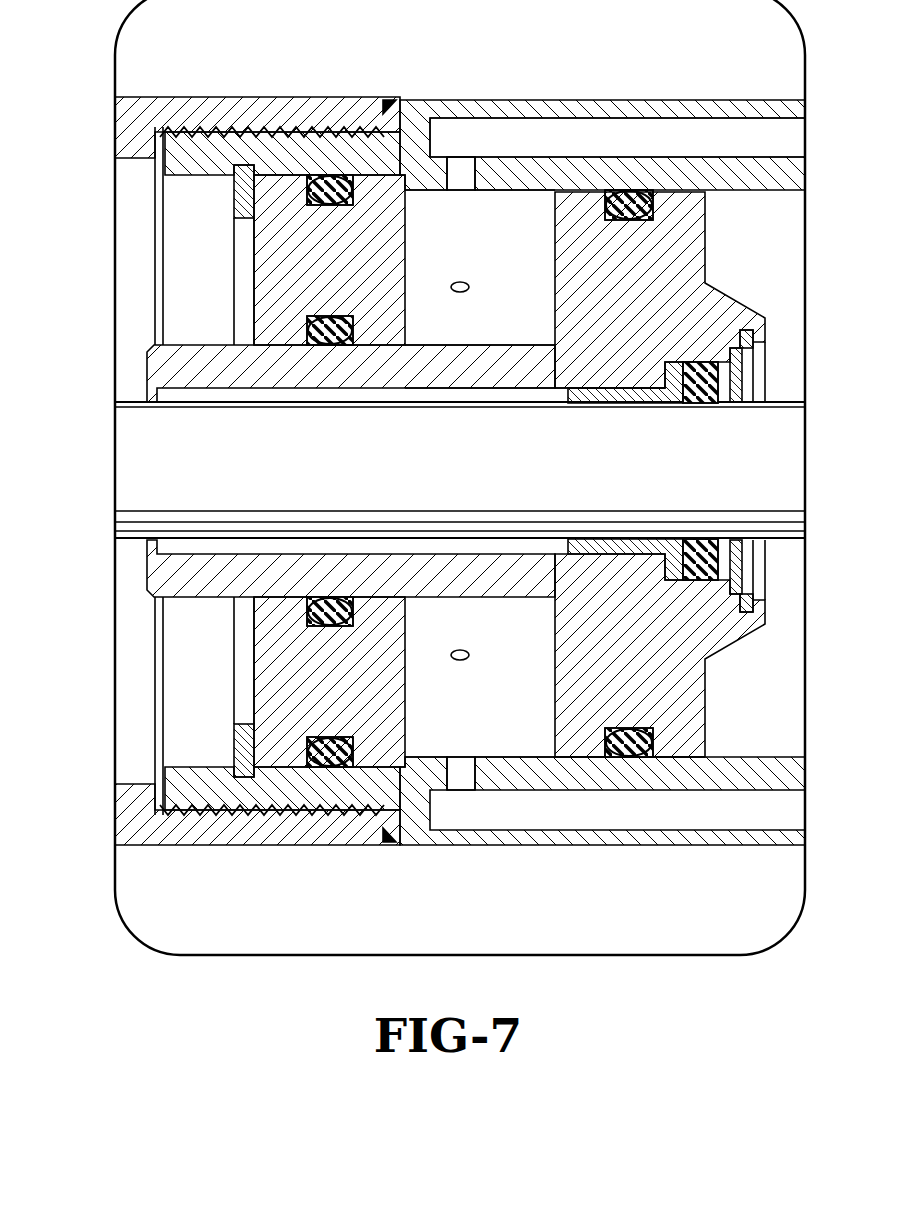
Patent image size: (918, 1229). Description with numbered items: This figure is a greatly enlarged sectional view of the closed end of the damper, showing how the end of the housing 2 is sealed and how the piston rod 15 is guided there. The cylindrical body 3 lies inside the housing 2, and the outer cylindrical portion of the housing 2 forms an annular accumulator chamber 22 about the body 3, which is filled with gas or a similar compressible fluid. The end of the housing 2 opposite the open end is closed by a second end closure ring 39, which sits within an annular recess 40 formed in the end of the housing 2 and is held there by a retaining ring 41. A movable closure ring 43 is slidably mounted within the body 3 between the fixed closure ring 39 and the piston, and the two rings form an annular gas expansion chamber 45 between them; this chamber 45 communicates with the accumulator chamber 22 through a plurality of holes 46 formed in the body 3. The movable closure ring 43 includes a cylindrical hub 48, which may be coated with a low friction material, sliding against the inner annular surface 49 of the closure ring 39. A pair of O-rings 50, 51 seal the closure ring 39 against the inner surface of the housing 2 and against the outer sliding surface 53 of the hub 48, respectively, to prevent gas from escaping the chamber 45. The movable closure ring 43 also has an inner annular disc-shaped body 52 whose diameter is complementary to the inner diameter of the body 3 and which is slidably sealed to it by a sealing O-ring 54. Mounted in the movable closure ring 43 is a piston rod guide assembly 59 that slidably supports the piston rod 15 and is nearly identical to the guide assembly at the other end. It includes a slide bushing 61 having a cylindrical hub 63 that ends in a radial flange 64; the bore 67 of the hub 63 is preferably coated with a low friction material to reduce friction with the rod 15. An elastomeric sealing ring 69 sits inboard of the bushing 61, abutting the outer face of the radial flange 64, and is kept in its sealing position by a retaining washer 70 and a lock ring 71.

The housing 2 is at (648, 101).
The cylindrical body 3 is at (690, 792).
The piston rod 15 is at (119, 449).
The annular accumulator chamber 22 is at (568, 140).
The second end closure ring 39 is at (258, 276).
The annular recess 40 is at (286, 768).
The retaining ring 41 is at (245, 772).
The movable closure ring 43 is at (570, 757).
The annular gas expansion chamber 45 is at (520, 736).
The holes 46 is at (463, 183).
The cylindrical hub 48 is at (440, 372).
The inner annular surface 49 is at (268, 596).
The O-ring 50 is at (330, 180).
The O-ring 51 is at (334, 348).
The inner annular disc-shaped body 52 is at (695, 246).
The outer sliding surface 53 is at (191, 345).
The sealing O-ring 54 is at (629, 760).
The piston rod guide assembly 59 is at (751, 387).
The slide bushing 61 is at (627, 389).
The cylindrical hub 63 is at (601, 406).
The radial flange 64 is at (665, 586).
The bore 67 is at (576, 405).
The elastomeric sealing ring 69 is at (690, 586).
The retaining washer 70 is at (742, 560).
The lock ring 71 is at (752, 612).